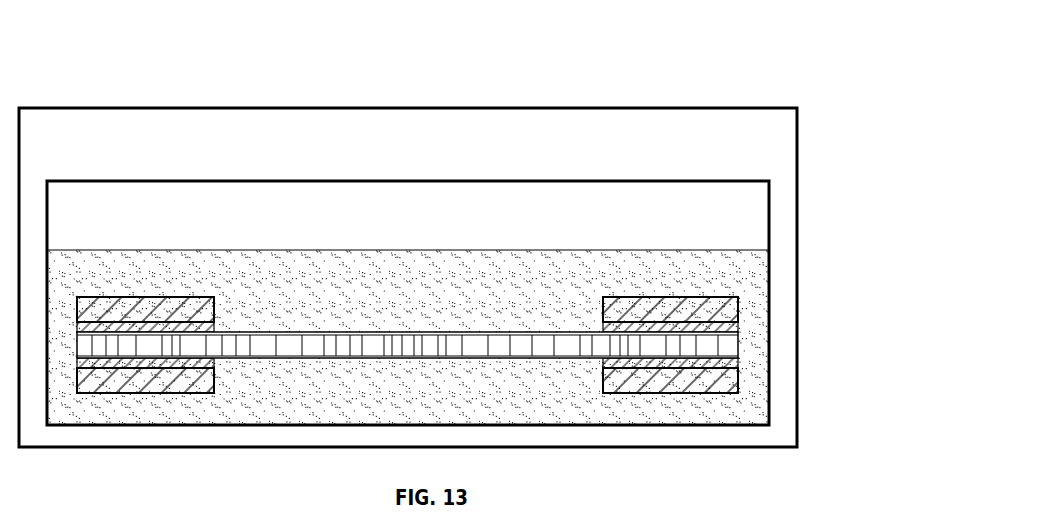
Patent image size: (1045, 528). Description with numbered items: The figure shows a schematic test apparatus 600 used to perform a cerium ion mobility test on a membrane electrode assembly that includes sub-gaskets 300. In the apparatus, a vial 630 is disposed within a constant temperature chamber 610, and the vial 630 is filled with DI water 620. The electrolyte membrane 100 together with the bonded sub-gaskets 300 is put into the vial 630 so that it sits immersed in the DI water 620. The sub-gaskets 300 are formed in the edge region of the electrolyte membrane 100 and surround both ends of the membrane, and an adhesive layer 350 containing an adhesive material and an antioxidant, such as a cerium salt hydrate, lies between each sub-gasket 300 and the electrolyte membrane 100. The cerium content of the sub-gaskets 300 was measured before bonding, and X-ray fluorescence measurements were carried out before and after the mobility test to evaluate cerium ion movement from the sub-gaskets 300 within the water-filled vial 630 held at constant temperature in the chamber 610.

The test apparatus 600 is at (752, 96).
The constant temperature chamber 610 is at (780, 143).
The vial 630 is at (771, 217).
The DI water 620 is at (748, 275).
The electrolyte membrane 100 is at (730, 345).
The adhesive layer 350 is at (730, 363).
The sub-gasket 300 is at (727, 378).